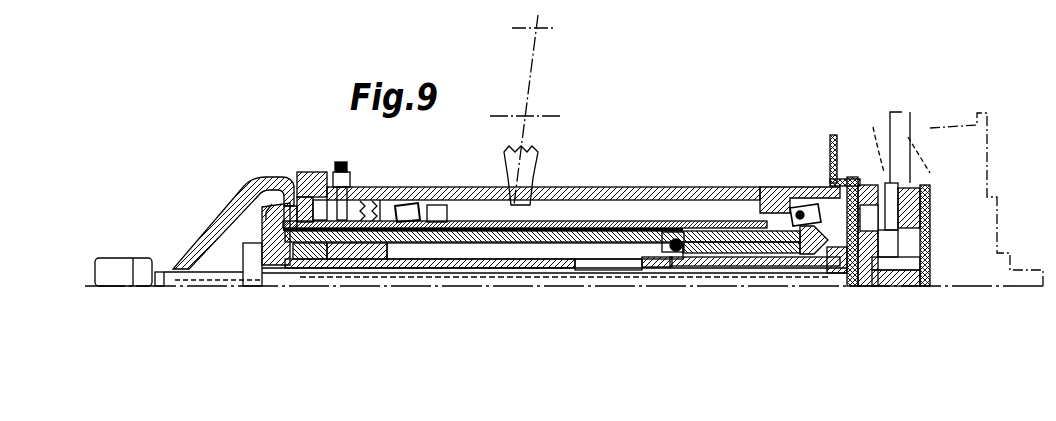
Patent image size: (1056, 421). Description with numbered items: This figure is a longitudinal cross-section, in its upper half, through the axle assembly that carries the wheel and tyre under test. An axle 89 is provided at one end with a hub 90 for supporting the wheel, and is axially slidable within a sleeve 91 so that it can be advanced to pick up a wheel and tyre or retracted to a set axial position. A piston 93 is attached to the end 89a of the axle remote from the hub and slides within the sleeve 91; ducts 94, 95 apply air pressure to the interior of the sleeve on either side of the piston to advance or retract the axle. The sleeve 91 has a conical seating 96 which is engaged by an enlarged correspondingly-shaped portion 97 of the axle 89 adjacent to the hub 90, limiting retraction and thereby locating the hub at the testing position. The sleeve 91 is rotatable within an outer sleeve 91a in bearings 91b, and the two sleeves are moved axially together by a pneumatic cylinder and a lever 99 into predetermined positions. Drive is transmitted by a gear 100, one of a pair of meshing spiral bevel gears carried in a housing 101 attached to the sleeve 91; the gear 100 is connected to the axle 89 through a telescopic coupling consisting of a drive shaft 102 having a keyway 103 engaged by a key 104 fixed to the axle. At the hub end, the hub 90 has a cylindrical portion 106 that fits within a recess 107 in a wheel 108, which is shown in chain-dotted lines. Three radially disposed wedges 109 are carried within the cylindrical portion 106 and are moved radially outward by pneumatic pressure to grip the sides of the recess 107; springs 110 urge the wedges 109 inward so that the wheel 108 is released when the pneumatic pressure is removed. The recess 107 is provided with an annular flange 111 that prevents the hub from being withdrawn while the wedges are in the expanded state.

The axle 89 is at (470, 270).
The end of the axle 89a is at (301, 273).
The hub 90 is at (906, 178).
The sleeve 91 is at (709, 240).
The outer sleeve 91a is at (606, 194).
The bearings 91b is at (408, 205).
The piston 93 is at (356, 270).
The duct 94 is at (222, 280).
The duct 95 is at (666, 232).
The conical seating 96 is at (790, 262).
The enlarged correspondingly-shaped portion 97 is at (836, 273).
The lever 99 is at (504, 157).
The gear 100 is at (266, 194).
The housing 101 is at (210, 222).
The drive shaft 102 is at (531, 274).
The keyway 103 is at (665, 273).
The key 104 is at (606, 271).
The cylindrical portion 106 is at (908, 182).
The recess 107 is at (864, 138).
The wheel 108 is at (948, 123).
The wedges 109 is at (890, 206).
The springs 110 is at (912, 223).
The annular flange 111 is at (870, 185).